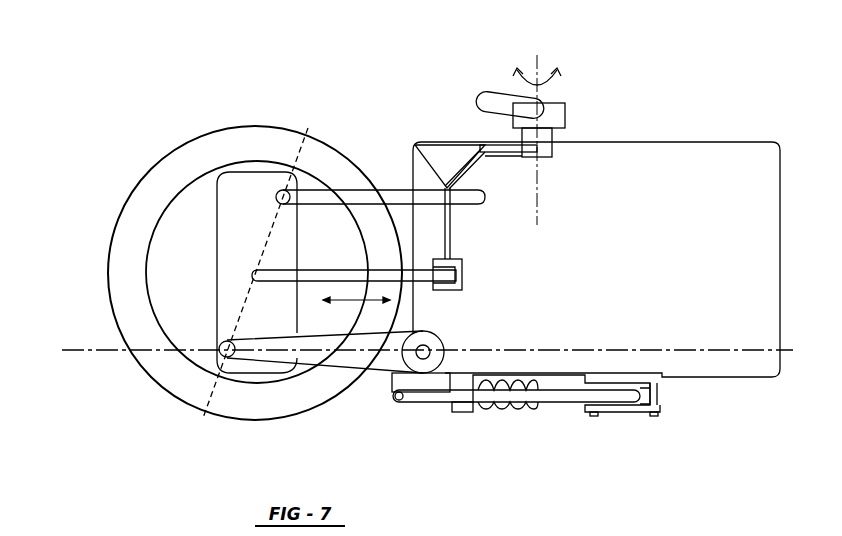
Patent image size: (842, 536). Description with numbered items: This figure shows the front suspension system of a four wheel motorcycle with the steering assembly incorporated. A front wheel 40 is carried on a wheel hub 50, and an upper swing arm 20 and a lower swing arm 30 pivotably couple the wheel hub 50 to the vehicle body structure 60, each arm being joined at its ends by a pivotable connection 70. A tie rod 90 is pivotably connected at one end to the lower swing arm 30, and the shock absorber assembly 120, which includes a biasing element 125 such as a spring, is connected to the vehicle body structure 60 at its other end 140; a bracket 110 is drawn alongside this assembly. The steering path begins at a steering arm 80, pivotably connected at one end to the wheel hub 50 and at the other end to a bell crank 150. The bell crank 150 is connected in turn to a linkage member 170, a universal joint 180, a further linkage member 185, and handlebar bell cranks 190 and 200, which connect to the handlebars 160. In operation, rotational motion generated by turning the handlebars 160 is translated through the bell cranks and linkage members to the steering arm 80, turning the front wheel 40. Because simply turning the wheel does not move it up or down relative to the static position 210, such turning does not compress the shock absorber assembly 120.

The upper swing arm 20 is at (400, 190).
The lower swing arm 30 is at (390, 342).
The front wheel 40 is at (165, 390).
The wheel hub 50 is at (232, 260).
The vehicle body structure 60 is at (742, 142).
The pivotable connection 70 is at (283, 197).
The steering arm 80 is at (330, 270).
The tie rod 90 is at (562, 400).
The end bracket 110 is at (660, 410).
The shock absorber assembly 120 is at (499, 418).
The biasing element 125 is at (518, 415).
The other end 140 is at (452, 413).
The bell crank 150 is at (462, 262).
The handlebars 160 is at (567, 103).
The linkage member 170 is at (443, 223).
The universal joint 180 is at (418, 165).
The linkage member 185 is at (497, 140).
The handlebar bell crank 190 is at (552, 157).
The handlebar bell crank 200 is at (455, 150).
The static position 210 is at (78, 340).